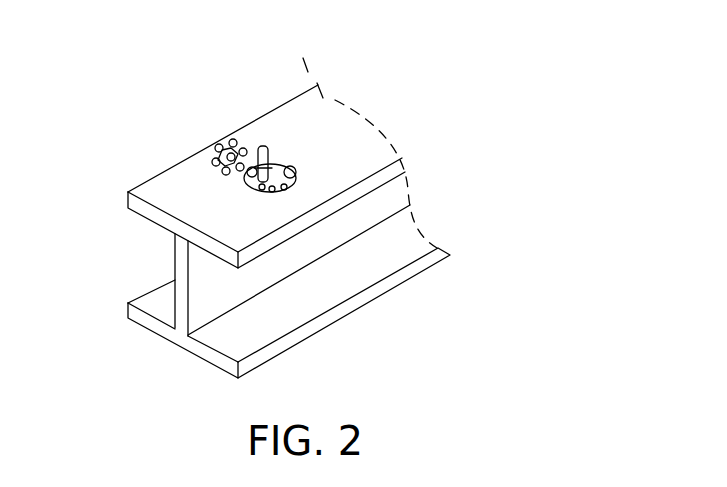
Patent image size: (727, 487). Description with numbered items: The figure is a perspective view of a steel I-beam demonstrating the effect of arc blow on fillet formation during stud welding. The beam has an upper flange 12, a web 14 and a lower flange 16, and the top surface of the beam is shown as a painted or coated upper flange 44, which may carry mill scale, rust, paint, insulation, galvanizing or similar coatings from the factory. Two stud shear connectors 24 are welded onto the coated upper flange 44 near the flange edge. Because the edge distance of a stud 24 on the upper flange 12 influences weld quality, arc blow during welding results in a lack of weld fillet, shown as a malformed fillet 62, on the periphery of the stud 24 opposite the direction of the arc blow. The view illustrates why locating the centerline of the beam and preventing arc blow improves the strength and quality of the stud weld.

The upper flange 12 is at (244, 234).
The web 14 is at (165, 267).
The lower flange 16 is at (150, 348).
The painted or coated upper flange 44 is at (170, 195).
The stud shear connector 24 is at (228, 142).
The malformed fillet 62 is at (256, 127).